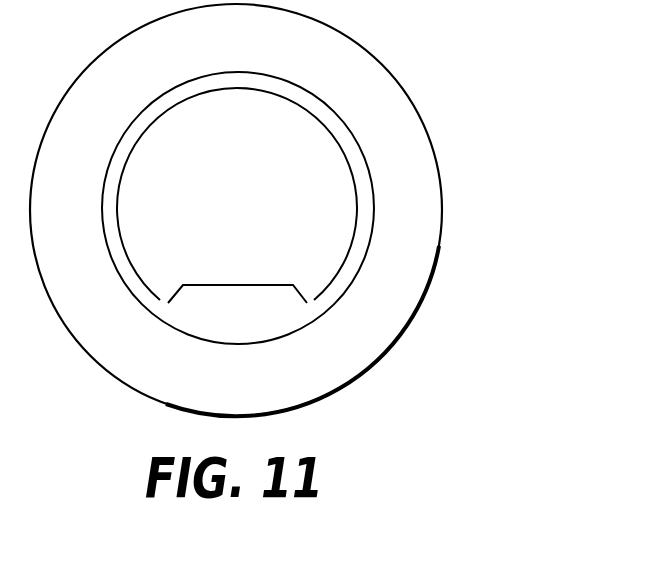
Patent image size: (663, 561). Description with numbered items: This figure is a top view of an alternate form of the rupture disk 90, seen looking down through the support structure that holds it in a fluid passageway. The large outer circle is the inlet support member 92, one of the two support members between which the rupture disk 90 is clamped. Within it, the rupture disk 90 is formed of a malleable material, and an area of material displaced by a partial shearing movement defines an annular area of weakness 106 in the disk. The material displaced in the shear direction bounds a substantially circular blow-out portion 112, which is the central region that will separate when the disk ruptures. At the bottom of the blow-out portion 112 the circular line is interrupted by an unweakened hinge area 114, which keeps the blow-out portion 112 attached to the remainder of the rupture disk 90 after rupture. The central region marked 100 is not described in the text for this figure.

The rupture disk 90 is at (238, 122).
The inlet support member 92 is at (377, 112).
The central surface 100 is at (264, 191).
The area of weakness 106 is at (347, 163).
The blow-out portion 112 is at (152, 148).
The unweakened hinge area 114 is at (237, 280).